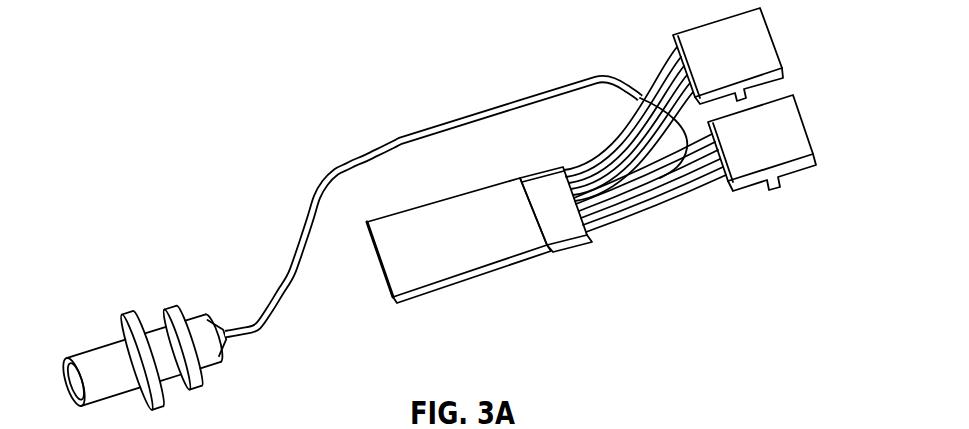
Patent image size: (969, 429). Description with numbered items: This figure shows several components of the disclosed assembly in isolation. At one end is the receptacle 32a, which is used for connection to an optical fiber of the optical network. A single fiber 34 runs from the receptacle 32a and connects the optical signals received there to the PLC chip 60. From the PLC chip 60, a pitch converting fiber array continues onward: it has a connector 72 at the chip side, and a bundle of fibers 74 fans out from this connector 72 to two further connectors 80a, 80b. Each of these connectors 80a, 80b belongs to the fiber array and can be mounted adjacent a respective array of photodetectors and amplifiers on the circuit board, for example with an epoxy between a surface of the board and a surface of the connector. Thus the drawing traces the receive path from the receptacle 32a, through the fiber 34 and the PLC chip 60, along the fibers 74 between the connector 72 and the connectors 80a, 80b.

The receptacle 32a is at (93, 346).
The fiber 34 is at (463, 117).
The PLC chip 60 is at (455, 286).
The connector 72 is at (583, 250).
The fibers 74 is at (689, 187).
The connector 80a is at (781, 36).
The connector 80b is at (806, 128).